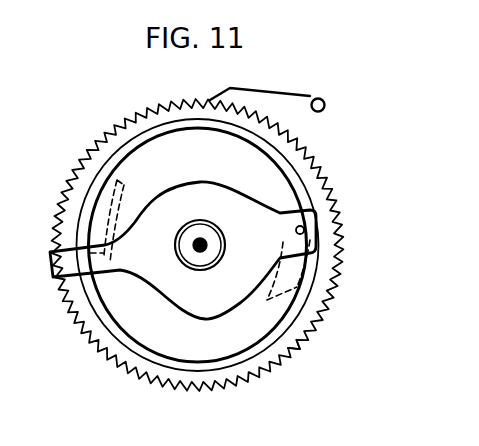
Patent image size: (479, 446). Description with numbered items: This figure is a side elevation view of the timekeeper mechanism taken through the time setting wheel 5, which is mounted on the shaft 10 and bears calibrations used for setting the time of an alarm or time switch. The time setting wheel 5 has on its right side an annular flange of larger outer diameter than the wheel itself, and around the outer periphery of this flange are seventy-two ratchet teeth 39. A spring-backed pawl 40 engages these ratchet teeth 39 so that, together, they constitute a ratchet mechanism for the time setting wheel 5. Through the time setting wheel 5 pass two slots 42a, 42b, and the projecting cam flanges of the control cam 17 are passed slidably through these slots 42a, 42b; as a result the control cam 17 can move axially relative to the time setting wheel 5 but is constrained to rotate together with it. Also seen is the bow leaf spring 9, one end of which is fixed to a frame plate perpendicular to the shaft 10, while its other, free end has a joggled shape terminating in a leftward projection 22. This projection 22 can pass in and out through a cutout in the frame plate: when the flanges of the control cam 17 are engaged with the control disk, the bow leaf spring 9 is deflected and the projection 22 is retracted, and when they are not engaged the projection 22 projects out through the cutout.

The time-setting wheel 5 is at (110, 335).
The bow leaf spring 9 is at (200, 298).
The shaft 10 is at (197, 233).
The control cam 17 is at (250, 313).
The leftward projection 22 is at (55, 278).
The ratchet teeth 39 is at (298, 350).
The pawl 40 is at (305, 95).
The slot 42a is at (100, 210).
The slot 42b is at (297, 287).